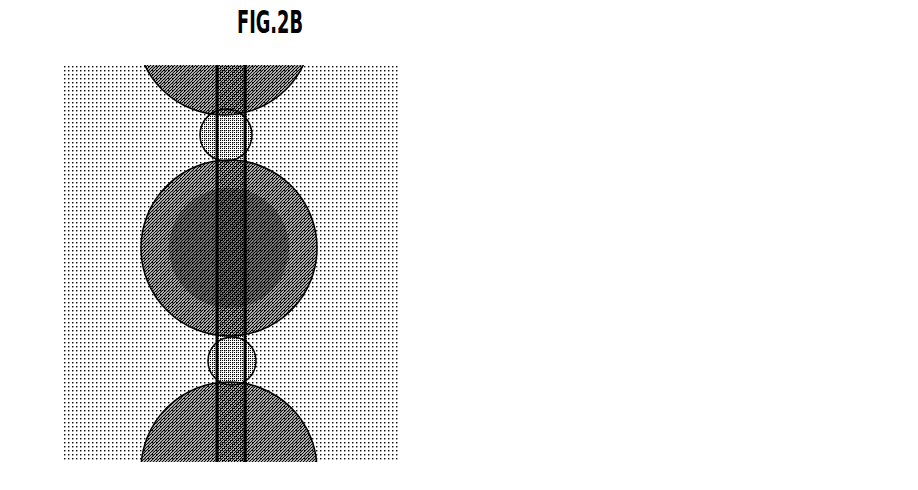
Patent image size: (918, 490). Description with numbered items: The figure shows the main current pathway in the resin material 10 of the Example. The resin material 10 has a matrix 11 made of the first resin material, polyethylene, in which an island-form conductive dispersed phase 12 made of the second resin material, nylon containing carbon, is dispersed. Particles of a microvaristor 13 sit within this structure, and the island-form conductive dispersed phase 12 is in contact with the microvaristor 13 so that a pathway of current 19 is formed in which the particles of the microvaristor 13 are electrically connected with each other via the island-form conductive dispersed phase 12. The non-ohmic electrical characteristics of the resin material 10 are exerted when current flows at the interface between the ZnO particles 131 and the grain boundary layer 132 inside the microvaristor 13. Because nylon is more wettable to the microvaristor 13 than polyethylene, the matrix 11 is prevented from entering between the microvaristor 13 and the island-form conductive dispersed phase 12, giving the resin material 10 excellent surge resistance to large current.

The resin material 10 is at (270, 245).
The matrix 11 is at (357, 143).
The island-form conductive dispersed phase 12 is at (258, 352).
The microvaristor 13 is at (309, 228).
The ZnO particles 131 is at (285, 245).
The grain boundary layer 132 is at (318, 257).
The pathway of current 19 is at (317, 417).